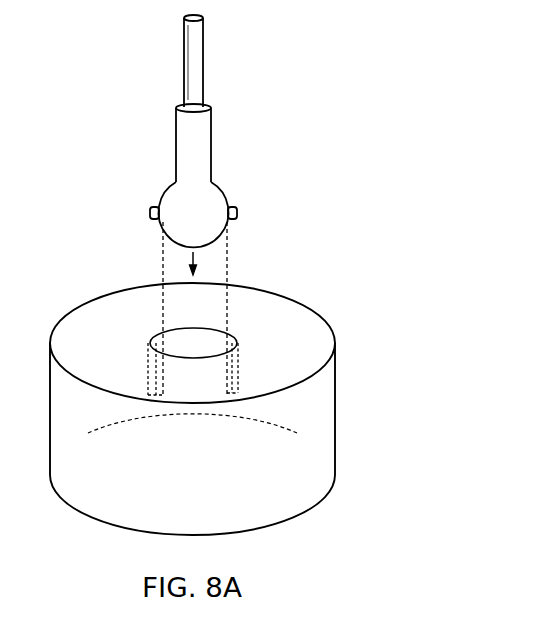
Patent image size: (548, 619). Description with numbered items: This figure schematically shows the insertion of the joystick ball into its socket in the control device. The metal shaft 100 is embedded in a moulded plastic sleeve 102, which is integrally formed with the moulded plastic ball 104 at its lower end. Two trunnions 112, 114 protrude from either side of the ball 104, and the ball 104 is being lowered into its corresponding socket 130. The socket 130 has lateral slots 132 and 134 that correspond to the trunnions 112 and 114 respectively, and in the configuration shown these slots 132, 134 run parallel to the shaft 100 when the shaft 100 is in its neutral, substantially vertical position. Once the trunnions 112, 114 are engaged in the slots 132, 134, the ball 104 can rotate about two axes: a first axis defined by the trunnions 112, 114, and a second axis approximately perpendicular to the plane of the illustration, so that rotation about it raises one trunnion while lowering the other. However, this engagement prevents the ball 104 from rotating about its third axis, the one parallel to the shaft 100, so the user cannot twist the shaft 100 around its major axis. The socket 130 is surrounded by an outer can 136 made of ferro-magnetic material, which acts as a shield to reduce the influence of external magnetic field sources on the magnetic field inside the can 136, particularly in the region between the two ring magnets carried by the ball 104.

The metal shaft 100 is at (203, 62).
The moulded plastic sleeve 102 is at (211, 148).
The moulded plastic ball 104 is at (212, 200).
The trunnion 112 is at (150, 214).
The trunnion 114 is at (238, 213).
The socket 130 is at (210, 340).
The lateral slot 132 is at (147, 370).
The lateral slot 134 is at (237, 378).
The outer can 136 is at (336, 437).